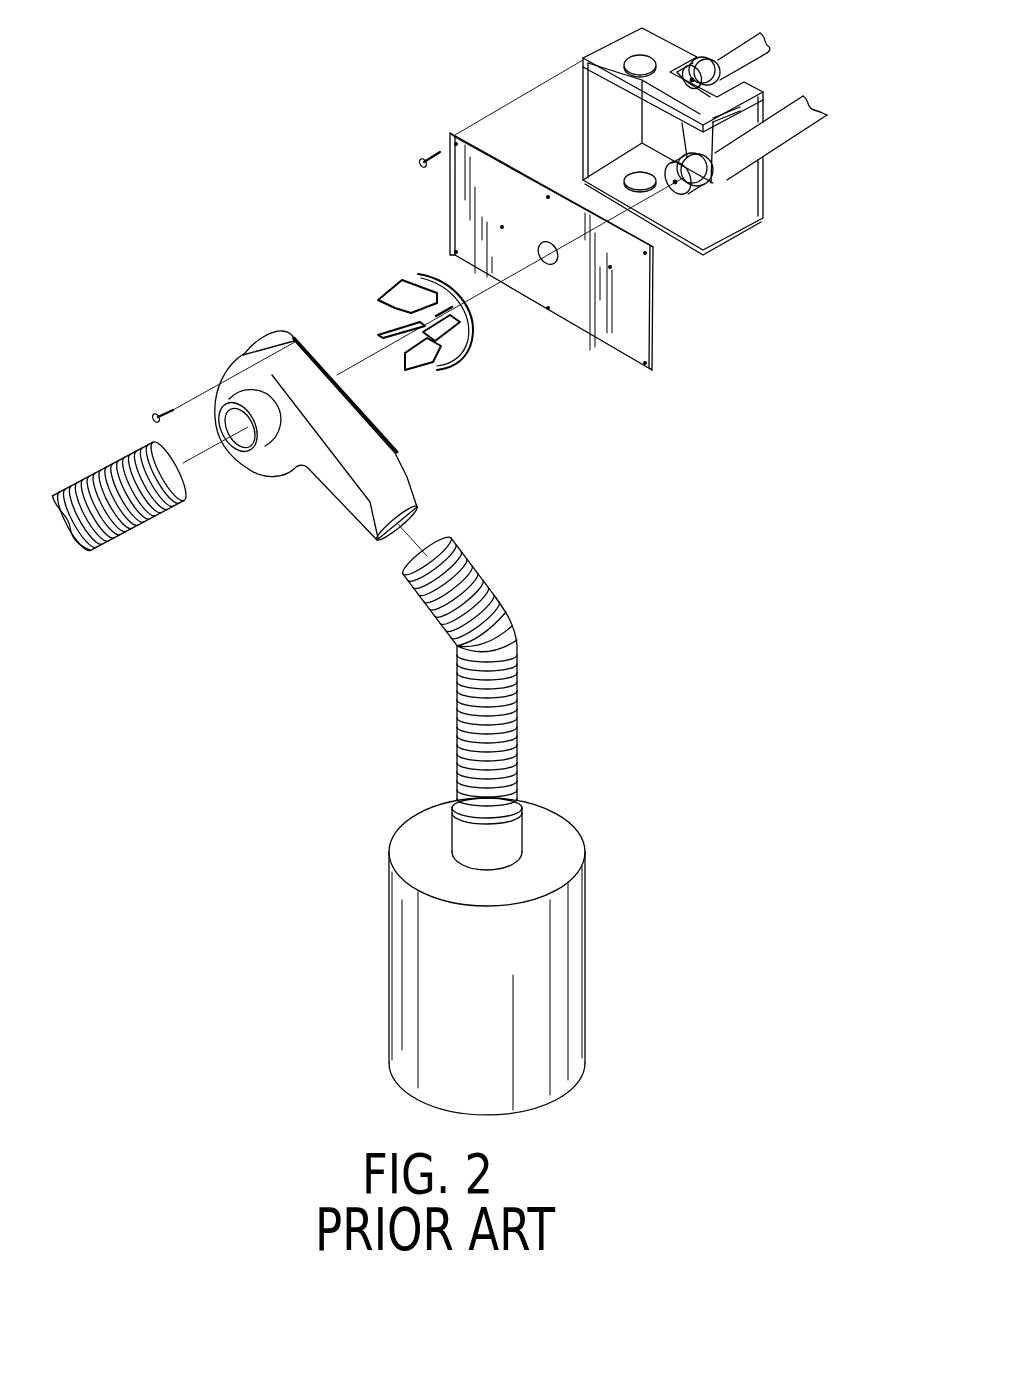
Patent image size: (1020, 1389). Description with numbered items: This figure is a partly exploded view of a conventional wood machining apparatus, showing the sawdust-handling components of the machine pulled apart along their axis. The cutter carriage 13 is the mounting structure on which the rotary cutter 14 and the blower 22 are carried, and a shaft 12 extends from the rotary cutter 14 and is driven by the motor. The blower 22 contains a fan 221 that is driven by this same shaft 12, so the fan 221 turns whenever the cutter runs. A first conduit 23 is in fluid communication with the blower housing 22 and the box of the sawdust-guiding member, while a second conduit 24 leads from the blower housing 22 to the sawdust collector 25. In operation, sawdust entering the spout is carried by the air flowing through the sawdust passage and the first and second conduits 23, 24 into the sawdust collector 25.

The shaft 12 is at (695, 183).
The cutter carriage 13 is at (618, 47).
The rotary cutter 14 is at (788, 123).
The blower 22 is at (243, 353).
The fan 221 is at (393, 293).
The first conduit 23 is at (140, 520).
The second conduit 24 is at (518, 693).
The sawdust collector 25 is at (565, 972).